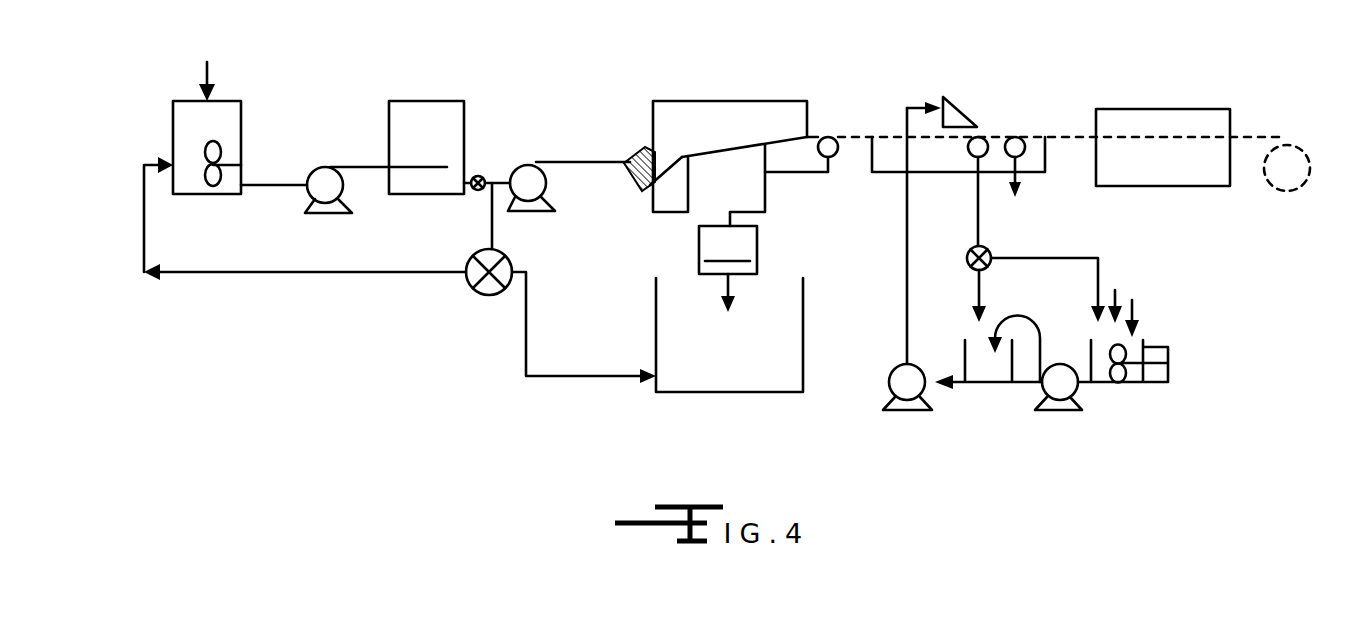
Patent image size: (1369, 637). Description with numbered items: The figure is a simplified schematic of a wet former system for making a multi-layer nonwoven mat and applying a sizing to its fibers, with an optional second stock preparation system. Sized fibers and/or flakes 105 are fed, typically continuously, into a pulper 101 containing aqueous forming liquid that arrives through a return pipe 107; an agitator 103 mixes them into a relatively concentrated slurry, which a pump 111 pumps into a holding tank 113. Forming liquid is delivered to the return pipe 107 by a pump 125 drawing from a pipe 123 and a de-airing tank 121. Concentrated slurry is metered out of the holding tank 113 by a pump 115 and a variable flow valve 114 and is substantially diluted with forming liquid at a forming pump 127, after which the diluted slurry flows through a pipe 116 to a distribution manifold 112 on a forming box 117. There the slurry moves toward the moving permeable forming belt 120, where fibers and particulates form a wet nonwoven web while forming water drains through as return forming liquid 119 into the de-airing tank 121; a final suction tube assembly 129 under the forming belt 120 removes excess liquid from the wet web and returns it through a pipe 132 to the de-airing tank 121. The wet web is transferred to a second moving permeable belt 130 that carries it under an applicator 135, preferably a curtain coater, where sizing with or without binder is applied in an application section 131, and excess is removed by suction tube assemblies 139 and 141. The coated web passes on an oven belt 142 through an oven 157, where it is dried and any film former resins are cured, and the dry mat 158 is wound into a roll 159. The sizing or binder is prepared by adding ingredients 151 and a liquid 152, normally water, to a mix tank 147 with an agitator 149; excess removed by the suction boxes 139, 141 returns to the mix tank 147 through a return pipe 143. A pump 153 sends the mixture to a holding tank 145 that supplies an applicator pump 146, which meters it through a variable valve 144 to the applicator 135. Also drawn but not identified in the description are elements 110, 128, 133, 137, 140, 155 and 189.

The pulper 101 is at (227, 117).
The agitator 103 is at (222, 157).
The sized fibers and/or flakes 105 is at (207, 69).
The return pipe 107 is at (143, 200).
The controller 110 is at (728, 269).
The pump 111 is at (345, 189).
The distribution manifold 112 is at (643, 186).
The holding tank 113 is at (435, 125).
The variable flow valve 114 is at (482, 177).
The pump 115 is at (528, 166).
The pipe 116 is at (582, 160).
The forming box 117 is at (705, 113).
The return forming liquid 119 is at (765, 183).
The forming belt 120 is at (745, 150).
The de-airing tank 121 is at (772, 329).
The pipe 123 is at (567, 377).
The pump 125 is at (504, 257).
The forming pump 127 is at (492, 232).
The sensor 128 is at (813, 137).
The final suction tube assembly 129 is at (830, 137).
The second moving permeable belt 130 is at (847, 137).
The application section 131 is at (988, 86).
The pipe 132 is at (798, 173).
The channel wall 133 is at (897, 140).
The applicator 135 is at (952, 112).
The line 137 is at (908, 213).
The suction tube assembly 139 is at (980, 137).
The line 140 is at (1067, 258).
The suction tube assembly 141 is at (1018, 137).
The oven belt 142 is at (1063, 137).
The return pipe 143 is at (979, 220).
The variable valve 144 is at (968, 247).
The holding tank 145 is at (977, 350).
The applicator pump 146 is at (889, 382).
The mix tank 147 is at (1107, 345).
The agitator 149 is at (1097, 385).
The ingredients 151 is at (1117, 295).
The liquid 152 is at (1132, 308).
The pump 153 is at (1040, 388).
The line 155 is at (1013, 315).
The oven 157 is at (1173, 122).
The dry mat 158 is at (1255, 137).
The roll 159 is at (1287, 150).
The line 189 is at (258, 190).